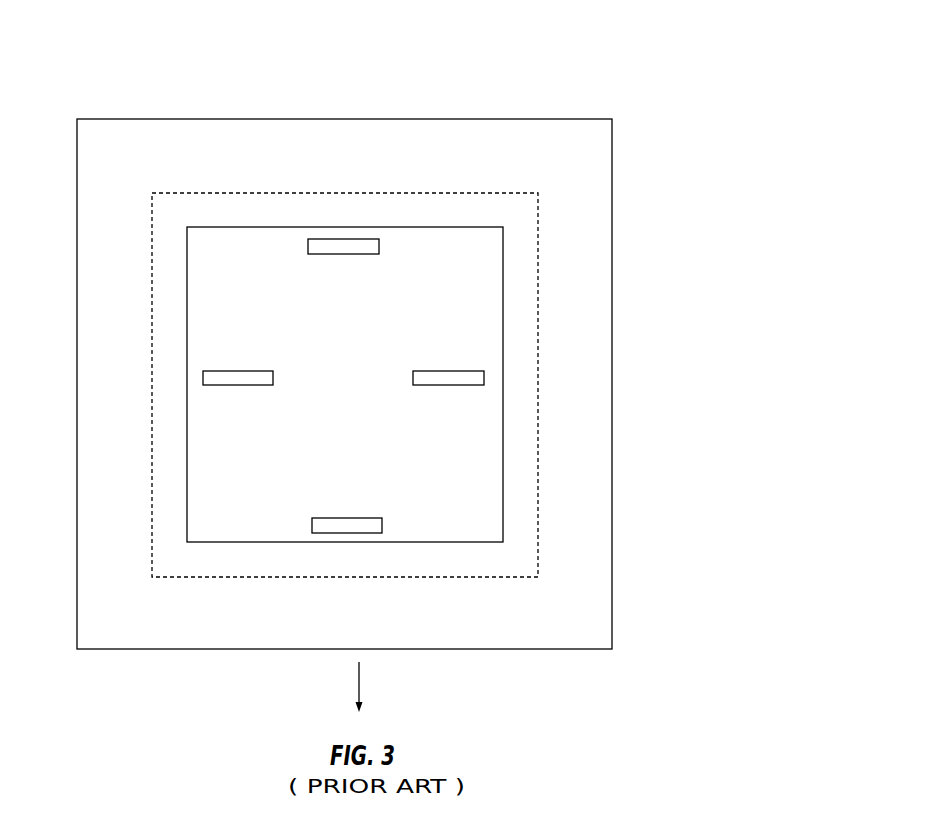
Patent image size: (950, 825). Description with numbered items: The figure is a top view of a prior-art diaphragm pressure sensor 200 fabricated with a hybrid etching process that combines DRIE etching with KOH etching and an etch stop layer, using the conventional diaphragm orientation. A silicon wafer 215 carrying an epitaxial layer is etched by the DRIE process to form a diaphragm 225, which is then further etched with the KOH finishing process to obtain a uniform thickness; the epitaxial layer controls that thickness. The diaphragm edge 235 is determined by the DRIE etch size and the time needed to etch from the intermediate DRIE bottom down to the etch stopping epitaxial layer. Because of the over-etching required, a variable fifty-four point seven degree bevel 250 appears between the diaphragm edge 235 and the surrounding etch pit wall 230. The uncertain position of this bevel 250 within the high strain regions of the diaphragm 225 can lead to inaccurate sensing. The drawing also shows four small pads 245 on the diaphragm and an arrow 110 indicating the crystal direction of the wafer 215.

The diaphragm pressure sensor 200 is at (599, 52).
The wafer 215 is at (512, 118).
The etch pit wall 230 is at (492, 577).
The diaphragm edge 235 is at (458, 227).
The pads / springs 245 is at (343, 239).
The bevel 250 is at (172, 482).
The diaphragm 225 is at (362, 462).
The direction arrow 110 is at (359, 692).